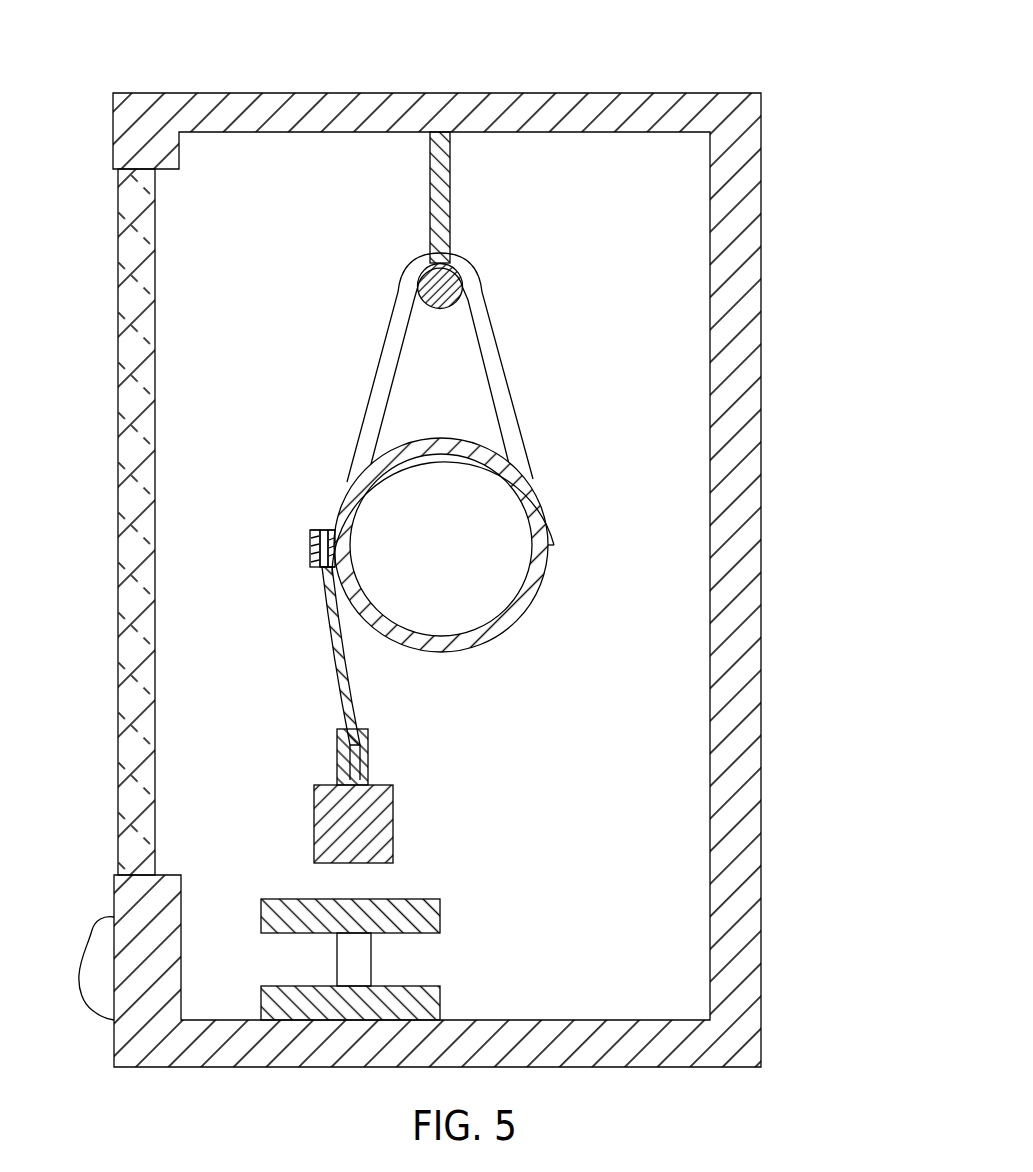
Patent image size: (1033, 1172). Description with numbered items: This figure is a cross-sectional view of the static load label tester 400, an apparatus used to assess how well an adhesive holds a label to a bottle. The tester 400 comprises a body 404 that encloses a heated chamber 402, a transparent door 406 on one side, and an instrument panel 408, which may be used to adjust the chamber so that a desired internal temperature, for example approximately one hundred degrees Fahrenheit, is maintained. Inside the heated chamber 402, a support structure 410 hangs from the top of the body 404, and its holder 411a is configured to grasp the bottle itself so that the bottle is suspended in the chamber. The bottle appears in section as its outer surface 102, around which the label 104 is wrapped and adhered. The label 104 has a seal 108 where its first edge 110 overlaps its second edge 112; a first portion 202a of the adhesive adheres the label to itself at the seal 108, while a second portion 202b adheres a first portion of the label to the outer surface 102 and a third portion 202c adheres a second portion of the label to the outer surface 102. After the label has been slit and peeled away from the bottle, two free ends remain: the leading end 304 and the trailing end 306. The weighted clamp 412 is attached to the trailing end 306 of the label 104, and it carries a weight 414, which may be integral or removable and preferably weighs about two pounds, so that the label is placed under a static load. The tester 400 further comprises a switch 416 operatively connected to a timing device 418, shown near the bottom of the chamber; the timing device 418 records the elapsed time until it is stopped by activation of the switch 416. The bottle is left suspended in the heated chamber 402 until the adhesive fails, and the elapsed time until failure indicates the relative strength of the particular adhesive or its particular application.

The static load label tester 400 is at (782, 75).
The heated chamber 402 is at (687, 551).
The body 404 is at (743, 307).
The transparent door 406 is at (132, 520).
The instrument panel 408 is at (105, 935).
The support structure 410 is at (450, 282).
The holder 411a is at (395, 330).
The outer surface 102 is at (525, 605).
The label 104 is at (537, 488).
The leading end 304 is at (555, 541).
The seal 108 is at (300, 546).
The first edge 110 is at (313, 530).
The second edge 112 is at (325, 580).
The first portion of adhesive 202a is at (320, 528).
The second portion of adhesive 202b is at (330, 533).
The third portion of adhesive 202c is at (330, 590).
The weighted clamp 412 is at (342, 752).
The trailing end 306 is at (362, 752).
The weight 414 is at (330, 820).
The switch 416 is at (440, 905).
The timing device 418 is at (437, 993).